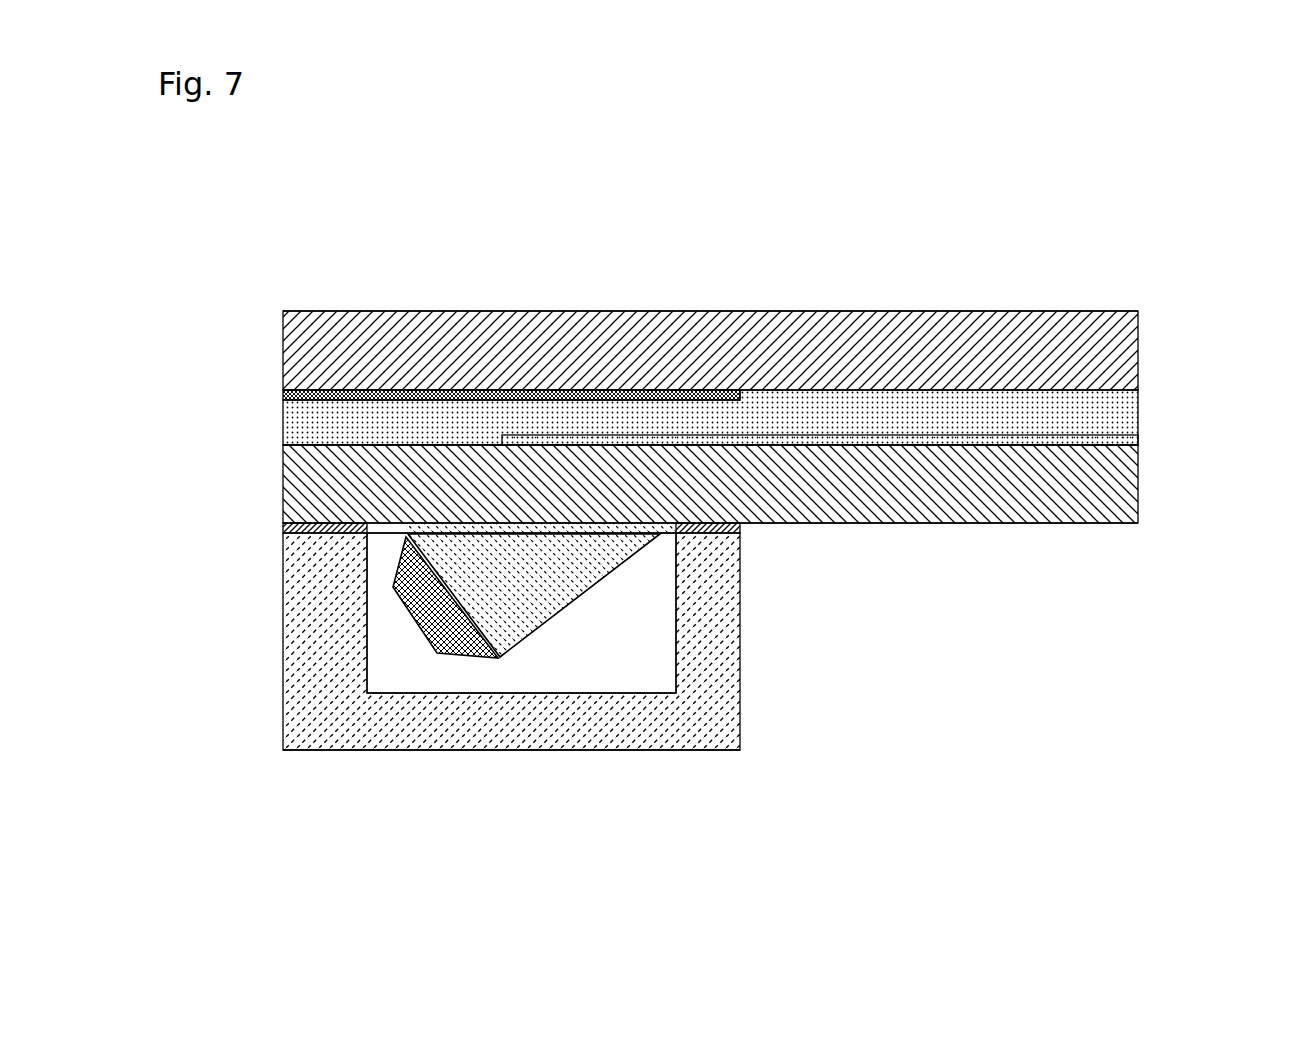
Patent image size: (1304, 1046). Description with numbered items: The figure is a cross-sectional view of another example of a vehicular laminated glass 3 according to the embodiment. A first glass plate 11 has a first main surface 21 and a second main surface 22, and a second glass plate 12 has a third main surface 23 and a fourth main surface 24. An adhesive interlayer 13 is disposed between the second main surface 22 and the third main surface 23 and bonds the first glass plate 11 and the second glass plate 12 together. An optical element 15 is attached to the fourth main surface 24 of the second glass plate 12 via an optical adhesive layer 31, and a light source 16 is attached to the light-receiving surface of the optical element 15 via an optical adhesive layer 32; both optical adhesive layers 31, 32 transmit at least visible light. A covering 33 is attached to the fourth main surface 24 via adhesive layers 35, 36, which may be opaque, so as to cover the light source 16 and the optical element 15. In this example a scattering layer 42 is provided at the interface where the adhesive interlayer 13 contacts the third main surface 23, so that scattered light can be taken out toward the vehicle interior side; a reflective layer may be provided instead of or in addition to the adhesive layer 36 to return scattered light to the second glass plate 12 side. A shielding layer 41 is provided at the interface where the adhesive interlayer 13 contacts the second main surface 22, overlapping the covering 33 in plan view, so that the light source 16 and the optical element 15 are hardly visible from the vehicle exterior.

The laminated glass 3 is at (1133, 185).
The first glass plate 11 is at (1138, 345).
The second glass plate 12 is at (1133, 482).
The adhesive interlayer 13 is at (1130, 418).
The optical element 15 is at (573, 605).
The light source 16 is at (418, 613).
The first main surface 21 is at (1110, 311).
The second main surface 22 is at (1128, 410).
The third main surface 23 is at (283, 437).
The fourth main surface 24 is at (1110, 525).
The optical adhesive layer 31 is at (655, 540).
The optical adhesive layer 32 is at (497, 657).
The covering 33 is at (365, 750).
The adhesive layer 35 is at (283, 527).
The adhesive layer 36 is at (740, 526).
The shielding layer 41 is at (283, 395).
The scattering layer 42 is at (1138, 440).